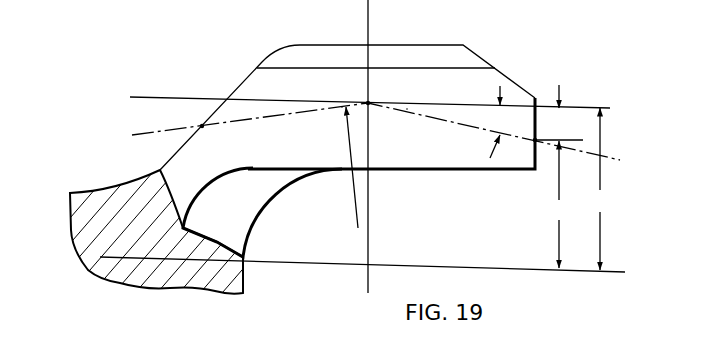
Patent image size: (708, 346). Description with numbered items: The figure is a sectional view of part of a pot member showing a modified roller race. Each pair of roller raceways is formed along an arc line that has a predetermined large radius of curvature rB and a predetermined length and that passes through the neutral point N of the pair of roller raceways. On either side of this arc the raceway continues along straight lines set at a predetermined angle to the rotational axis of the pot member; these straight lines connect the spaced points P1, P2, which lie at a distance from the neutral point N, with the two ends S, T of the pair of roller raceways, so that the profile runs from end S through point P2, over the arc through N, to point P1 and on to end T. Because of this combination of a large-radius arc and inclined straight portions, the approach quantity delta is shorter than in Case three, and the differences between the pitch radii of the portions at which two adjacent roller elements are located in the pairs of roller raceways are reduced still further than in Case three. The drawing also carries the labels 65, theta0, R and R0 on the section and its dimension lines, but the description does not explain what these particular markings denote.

The inclined surface 65 is at (495, 71).
The end of the pair of roller raceways S is at (196, 118).
The neutral point N is at (374, 146).
The end of the pair of roller raceways T is at (551, 147).
The spaced point P1 is at (399, 130).
The spaced point P2 is at (318, 126).
The angle theta 0 theta0 is at (498, 122).
The approach quantity delta is at (557, 117).
The radius R is at (557, 209).
The radius R0 is at (610, 189).
The radius of curvature rB is at (340, 167).